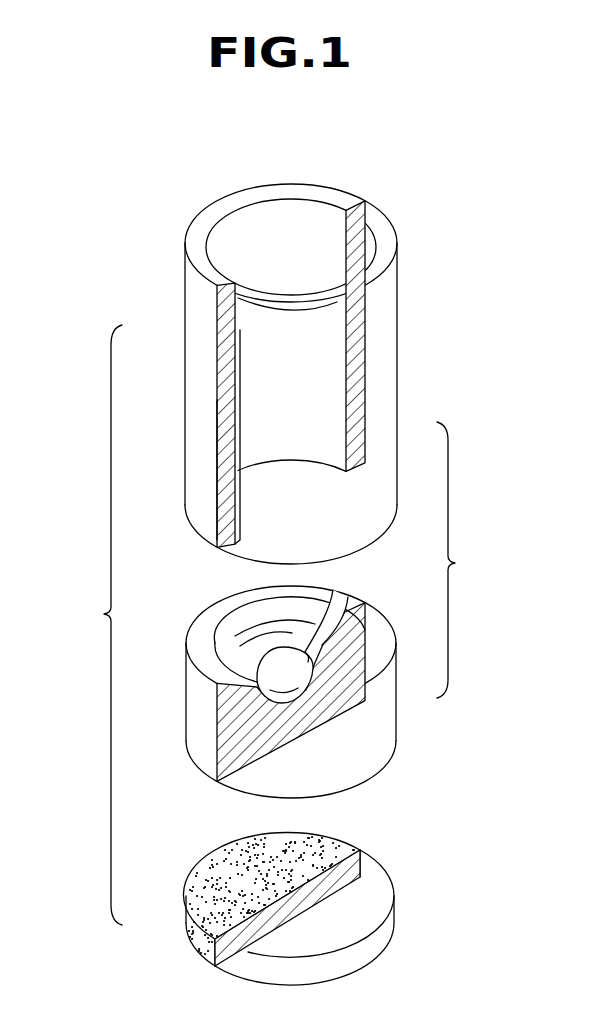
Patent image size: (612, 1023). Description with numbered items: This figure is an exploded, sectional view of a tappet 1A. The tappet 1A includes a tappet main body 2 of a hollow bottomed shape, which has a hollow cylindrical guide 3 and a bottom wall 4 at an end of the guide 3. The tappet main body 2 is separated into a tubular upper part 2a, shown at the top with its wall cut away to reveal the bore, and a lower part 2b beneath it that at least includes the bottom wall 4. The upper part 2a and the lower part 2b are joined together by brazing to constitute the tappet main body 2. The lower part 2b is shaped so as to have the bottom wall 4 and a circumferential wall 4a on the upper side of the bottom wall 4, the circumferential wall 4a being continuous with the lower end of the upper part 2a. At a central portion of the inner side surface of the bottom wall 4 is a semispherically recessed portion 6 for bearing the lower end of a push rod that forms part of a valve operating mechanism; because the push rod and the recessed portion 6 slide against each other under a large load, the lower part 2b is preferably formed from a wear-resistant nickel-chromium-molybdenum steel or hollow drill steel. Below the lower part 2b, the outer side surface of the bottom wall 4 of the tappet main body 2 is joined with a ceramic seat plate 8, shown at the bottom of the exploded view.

The tappet 1A is at (86, 625).
The tappet main body 2 is at (457, 560).
The tubular upper part 2a is at (200, 300).
The lower part 2b is at (259, 696).
The hollow cylindrical guide 3 is at (193, 507).
The bottom wall 4 is at (293, 738).
The circumferential wall 4a is at (213, 615).
The semispherically recessed portion 6 is at (330, 592).
The ceramic seat plate 8 is at (207, 953).